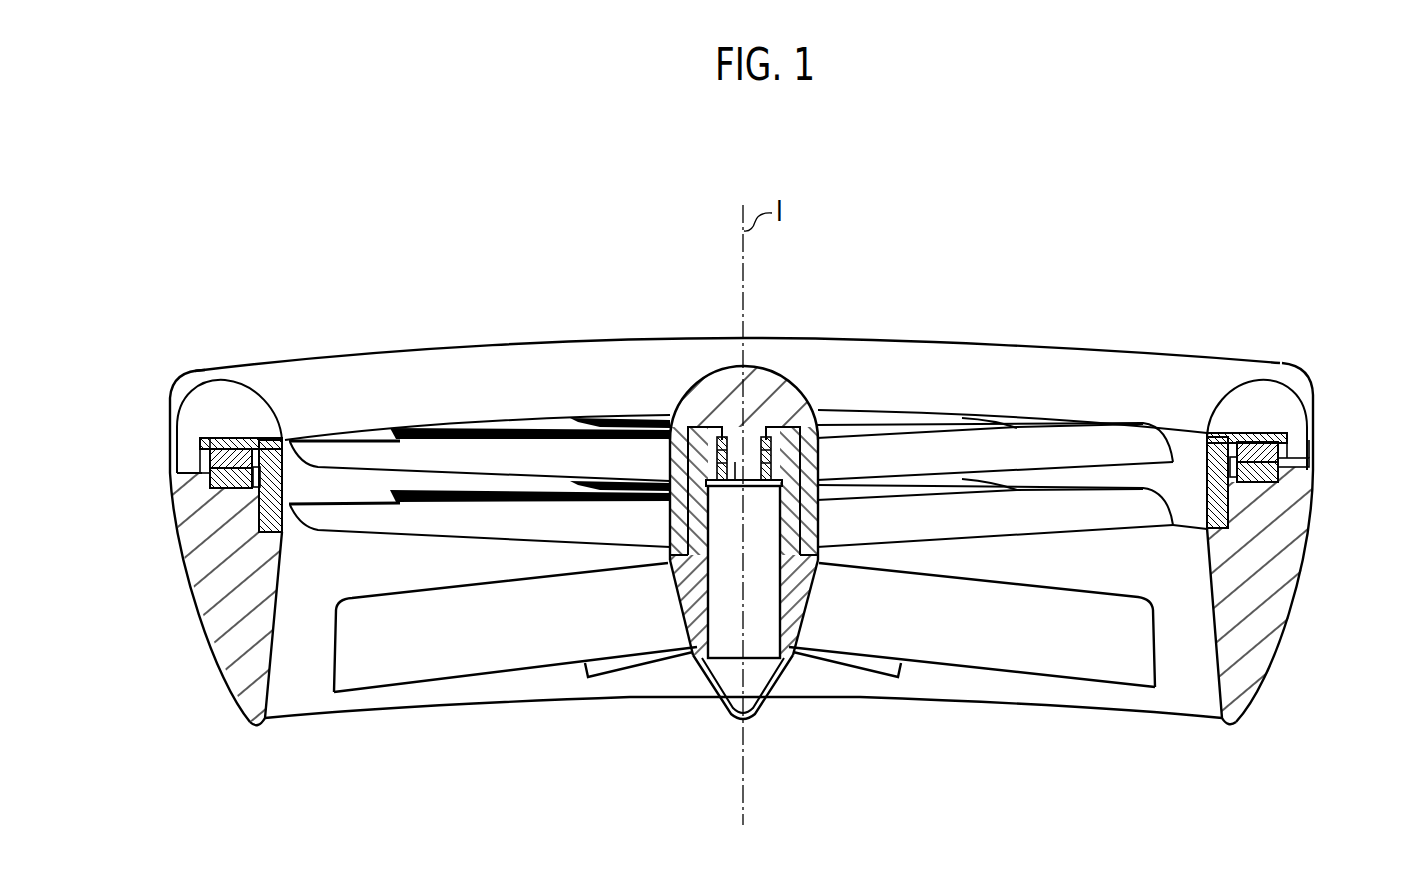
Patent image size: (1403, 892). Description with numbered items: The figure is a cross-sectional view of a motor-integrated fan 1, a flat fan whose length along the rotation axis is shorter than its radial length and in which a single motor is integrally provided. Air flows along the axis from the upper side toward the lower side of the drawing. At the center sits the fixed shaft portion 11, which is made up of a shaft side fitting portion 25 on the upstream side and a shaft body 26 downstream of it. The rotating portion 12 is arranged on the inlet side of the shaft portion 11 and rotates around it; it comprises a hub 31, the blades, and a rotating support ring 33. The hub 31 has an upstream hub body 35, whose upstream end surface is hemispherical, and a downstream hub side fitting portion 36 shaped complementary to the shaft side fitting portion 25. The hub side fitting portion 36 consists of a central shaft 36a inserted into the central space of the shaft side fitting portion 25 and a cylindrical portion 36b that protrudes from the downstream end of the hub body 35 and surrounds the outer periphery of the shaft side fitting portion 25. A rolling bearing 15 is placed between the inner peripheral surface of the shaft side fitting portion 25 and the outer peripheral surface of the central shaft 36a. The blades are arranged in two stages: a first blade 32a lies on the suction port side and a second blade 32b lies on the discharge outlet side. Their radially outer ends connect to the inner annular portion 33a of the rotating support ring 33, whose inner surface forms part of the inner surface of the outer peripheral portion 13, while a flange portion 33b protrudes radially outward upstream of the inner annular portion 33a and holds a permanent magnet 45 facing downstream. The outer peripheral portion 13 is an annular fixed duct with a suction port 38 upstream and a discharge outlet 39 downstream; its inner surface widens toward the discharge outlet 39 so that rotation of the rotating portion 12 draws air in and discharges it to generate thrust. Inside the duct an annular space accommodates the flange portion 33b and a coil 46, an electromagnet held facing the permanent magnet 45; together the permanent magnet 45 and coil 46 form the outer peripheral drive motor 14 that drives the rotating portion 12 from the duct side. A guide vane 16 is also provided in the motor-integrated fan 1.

The motor-integrated fan 1 is at (832, 268).
The shaft portion 11 is at (672, 615).
The rotating portion 12 is at (792, 378).
The outer peripheral portion 13 is at (360, 350).
The motor 14 is at (1297, 455).
The rolling bearing 15 is at (708, 427).
The guide vane 16 is at (1000, 650).
The shaft side fitting portion 25 is at (783, 437).
The shaft body 26 is at (803, 617).
The hub 31 is at (753, 363).
The first blade 32a is at (452, 453).
The second blade 32b is at (535, 515).
The rotating support ring 33 is at (243, 438).
The inner annular portion 33a is at (251, 433).
The flange portion 33b is at (210, 438).
The hub body 35 is at (767, 378).
The hub side fitting portion 36 is at (665, 463).
The central shaft 36a is at (700, 668).
The cylindrical portion 36b is at (668, 562).
The suction port 38 is at (1010, 346).
The discharge outlet 39 is at (1065, 725).
The permanent magnet 45 is at (1260, 480).
The coil 46 is at (1257, 474).